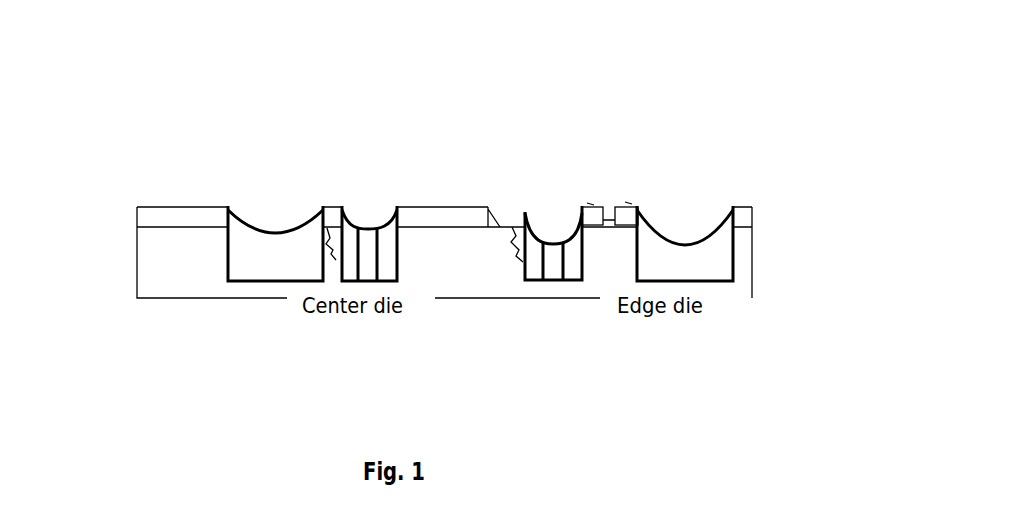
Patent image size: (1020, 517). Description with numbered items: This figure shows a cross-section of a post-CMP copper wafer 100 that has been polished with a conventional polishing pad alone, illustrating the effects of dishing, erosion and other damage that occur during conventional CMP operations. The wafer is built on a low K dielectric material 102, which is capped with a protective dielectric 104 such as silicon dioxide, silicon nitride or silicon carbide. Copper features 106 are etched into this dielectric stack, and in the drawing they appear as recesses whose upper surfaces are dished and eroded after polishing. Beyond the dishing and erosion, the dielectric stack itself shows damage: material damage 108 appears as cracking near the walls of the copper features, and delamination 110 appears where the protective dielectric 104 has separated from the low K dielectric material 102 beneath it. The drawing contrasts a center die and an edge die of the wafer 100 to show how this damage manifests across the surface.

The semiconductor wafer structure 100 is at (806, 65).
The low K dielectric material 102 is at (158, 265).
The protective dielectric 104 is at (173, 218).
The copper features 106 is at (248, 247).
The material damage 108 is at (512, 225).
The delamination 110 is at (493, 225).